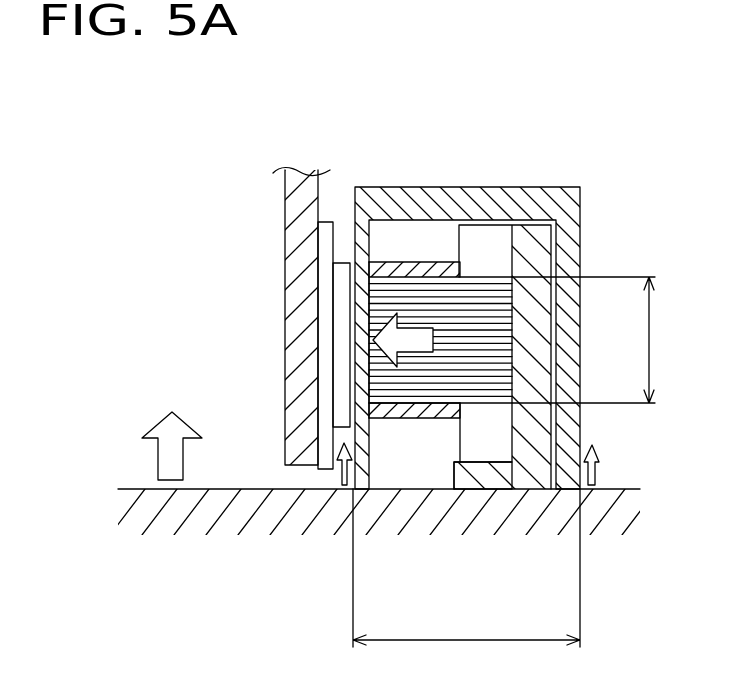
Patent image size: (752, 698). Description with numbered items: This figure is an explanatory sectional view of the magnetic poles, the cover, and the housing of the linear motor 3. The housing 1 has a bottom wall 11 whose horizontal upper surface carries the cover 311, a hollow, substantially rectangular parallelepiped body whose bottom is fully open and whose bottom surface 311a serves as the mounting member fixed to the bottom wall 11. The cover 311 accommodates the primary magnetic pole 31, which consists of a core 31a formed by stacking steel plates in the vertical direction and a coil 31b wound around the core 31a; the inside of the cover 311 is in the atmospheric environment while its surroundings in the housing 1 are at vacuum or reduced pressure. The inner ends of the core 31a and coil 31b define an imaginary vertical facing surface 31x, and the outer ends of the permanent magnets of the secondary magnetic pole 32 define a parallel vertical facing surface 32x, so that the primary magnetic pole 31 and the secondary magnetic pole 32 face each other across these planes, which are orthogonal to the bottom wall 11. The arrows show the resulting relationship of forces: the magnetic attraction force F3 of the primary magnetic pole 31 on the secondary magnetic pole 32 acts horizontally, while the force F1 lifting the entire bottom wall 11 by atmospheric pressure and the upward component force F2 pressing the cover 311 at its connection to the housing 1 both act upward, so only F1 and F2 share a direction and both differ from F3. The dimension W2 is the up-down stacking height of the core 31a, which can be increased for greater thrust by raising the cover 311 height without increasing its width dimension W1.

The housing 1 is at (263, 497).
The bottom wall 11 is at (228, 497).
The linear motor 3 is at (579, 159).
The primary magnetic pole 31 is at (440, 291).
The core 31a is at (468, 305).
The coil 31b is at (415, 268).
The facing surface 31x is at (365, 297).
The cover 311 is at (572, 234).
The bottom surface 311a is at (565, 492).
The secondary magnetic pole 32 is at (333, 357).
The facing surface 32x is at (350, 320).
The force F1 is at (163, 463).
The upward component force F2 is at (342, 477).
The magnetic attraction force F3 is at (413, 343).
The width dimension W1 is at (466, 578).
The dimension W2 is at (592, 340).